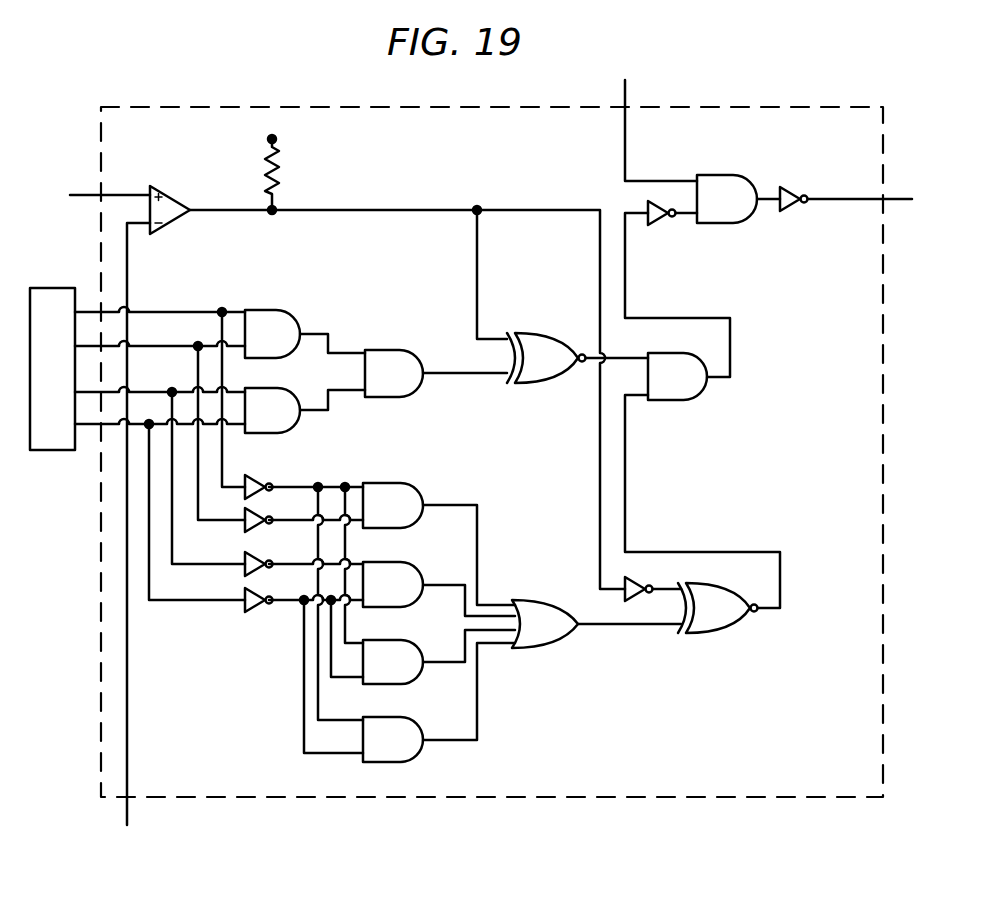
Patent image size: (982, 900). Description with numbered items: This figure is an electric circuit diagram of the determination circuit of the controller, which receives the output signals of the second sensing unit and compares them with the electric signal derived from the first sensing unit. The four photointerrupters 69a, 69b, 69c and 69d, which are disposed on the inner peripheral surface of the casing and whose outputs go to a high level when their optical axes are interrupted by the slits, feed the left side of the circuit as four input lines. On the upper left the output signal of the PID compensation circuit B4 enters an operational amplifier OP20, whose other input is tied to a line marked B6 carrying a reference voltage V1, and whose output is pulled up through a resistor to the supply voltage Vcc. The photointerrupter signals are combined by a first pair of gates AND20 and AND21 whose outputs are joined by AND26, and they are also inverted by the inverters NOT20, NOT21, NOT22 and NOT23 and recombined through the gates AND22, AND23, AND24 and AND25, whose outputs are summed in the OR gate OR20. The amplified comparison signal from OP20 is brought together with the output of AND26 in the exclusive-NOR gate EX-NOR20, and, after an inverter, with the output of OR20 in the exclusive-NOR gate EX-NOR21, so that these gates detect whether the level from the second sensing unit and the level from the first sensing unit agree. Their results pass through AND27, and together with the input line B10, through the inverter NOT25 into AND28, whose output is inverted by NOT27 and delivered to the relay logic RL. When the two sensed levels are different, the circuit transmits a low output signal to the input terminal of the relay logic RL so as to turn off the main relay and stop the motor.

The PID compensation circuit B4 is at (91, 196).
The operational amplifier OP20 is at (165, 197).
The supply voltage Vcc with pull-up resistor Vcc is at (272, 164).
The input line B10 is at (651, 118).
The relay logic RL is at (874, 201).
The input line B6 is at (98, 808).
The reference voltage V1 is at (124, 838).
The photointerrupter 69a is at (139, 312).
The photointerrupter 69b is at (139, 346).
The photointerrupter 69c is at (139, 392).
The photointerrupter 69d is at (139, 424).
The AND gate AND20 is at (273, 323).
The AND gate AND21 is at (273, 399).
The AND gate AND22 is at (394, 494).
The AND gate AND23 is at (394, 573).
The AND gate AND24 is at (395, 651).
The AND gate AND25 is at (394, 727).
The AND gate AND26 is at (394, 362).
The AND gate AND27 is at (676, 365).
The AND gate AND28 is at (723, 188).
The inverter NOT20 is at (275, 478).
The inverter NOT21 is at (275, 513).
The inverter NOT22 is at (275, 556).
The inverter NOT23 is at (275, 593).
The inverter NOT25 is at (659, 223).
The inverter NOT27 is at (789, 209).
The exclusive-NOR gate EX-NOR20 is at (537, 347).
The exclusive-NOR gate EX-NOR21 is at (705, 621).
The OR gate OR20 is at (545, 613).